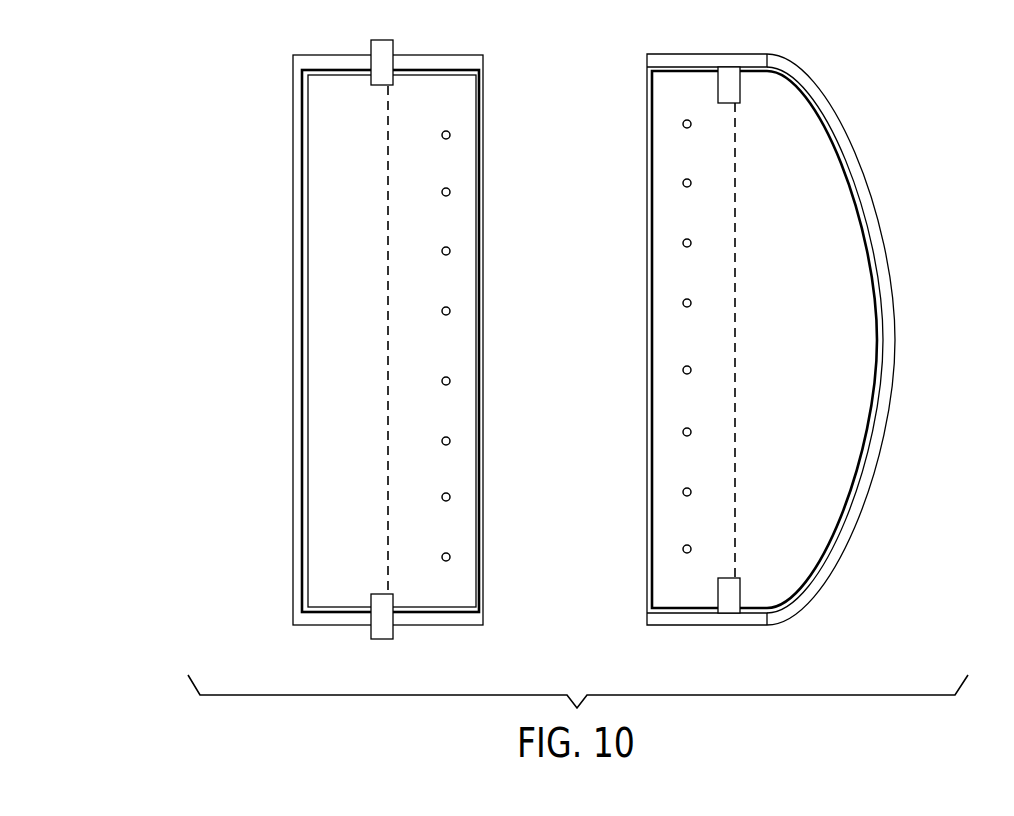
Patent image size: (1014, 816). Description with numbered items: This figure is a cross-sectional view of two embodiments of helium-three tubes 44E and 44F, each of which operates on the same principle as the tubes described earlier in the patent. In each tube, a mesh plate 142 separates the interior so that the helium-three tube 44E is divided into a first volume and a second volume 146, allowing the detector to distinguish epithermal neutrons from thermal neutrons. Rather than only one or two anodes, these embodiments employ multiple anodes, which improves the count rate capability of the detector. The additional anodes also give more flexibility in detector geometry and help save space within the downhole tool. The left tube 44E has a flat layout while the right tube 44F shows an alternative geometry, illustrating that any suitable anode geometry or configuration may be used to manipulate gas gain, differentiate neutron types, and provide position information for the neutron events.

The Helium-3 tube 44E is at (243, 115).
The Helium-3 tube 44F is at (635, 42).
The mesh plate 142 is at (388, 430).
The second volume 146 is at (435, 597).